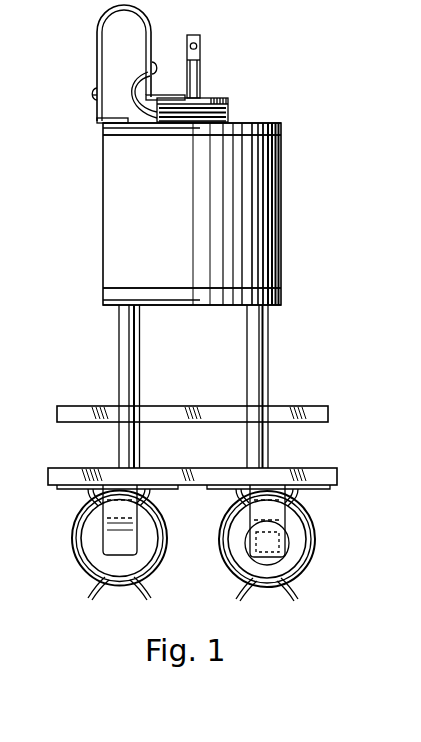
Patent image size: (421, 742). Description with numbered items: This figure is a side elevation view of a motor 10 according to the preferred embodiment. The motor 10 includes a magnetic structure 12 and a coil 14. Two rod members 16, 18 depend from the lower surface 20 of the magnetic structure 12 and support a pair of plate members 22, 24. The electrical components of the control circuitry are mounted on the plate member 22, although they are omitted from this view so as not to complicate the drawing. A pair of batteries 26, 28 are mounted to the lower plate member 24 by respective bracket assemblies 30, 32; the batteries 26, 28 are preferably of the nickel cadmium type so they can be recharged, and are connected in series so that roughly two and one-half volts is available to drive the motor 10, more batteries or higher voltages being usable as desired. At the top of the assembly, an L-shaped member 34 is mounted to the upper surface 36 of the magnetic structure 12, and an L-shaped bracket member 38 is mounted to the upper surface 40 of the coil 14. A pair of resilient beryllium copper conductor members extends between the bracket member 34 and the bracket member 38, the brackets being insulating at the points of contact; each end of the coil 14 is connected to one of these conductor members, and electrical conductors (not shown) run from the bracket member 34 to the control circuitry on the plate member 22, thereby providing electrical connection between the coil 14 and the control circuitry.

The motor 10 is at (283, 272).
The magnetic structure 12 is at (283, 181).
The coil 14 is at (230, 110).
The rod member 16 is at (139, 367).
The rod member 18 is at (247, 362).
The lower surface 20 is at (184, 305).
The plate member 22 is at (203, 385).
The plate member 24 is at (204, 444).
The battery 26 is at (119, 548).
The battery 28 is at (267, 550).
The bracket assembly 30 is at (71, 540).
The bracket assembly 32 is at (317, 551).
The L-shaped member 34 is at (97, 120).
The upper surface 36 is at (271, 120).
The L-shaped bracket member 38 is at (157, 80).
The upper surface 40 is at (215, 99).